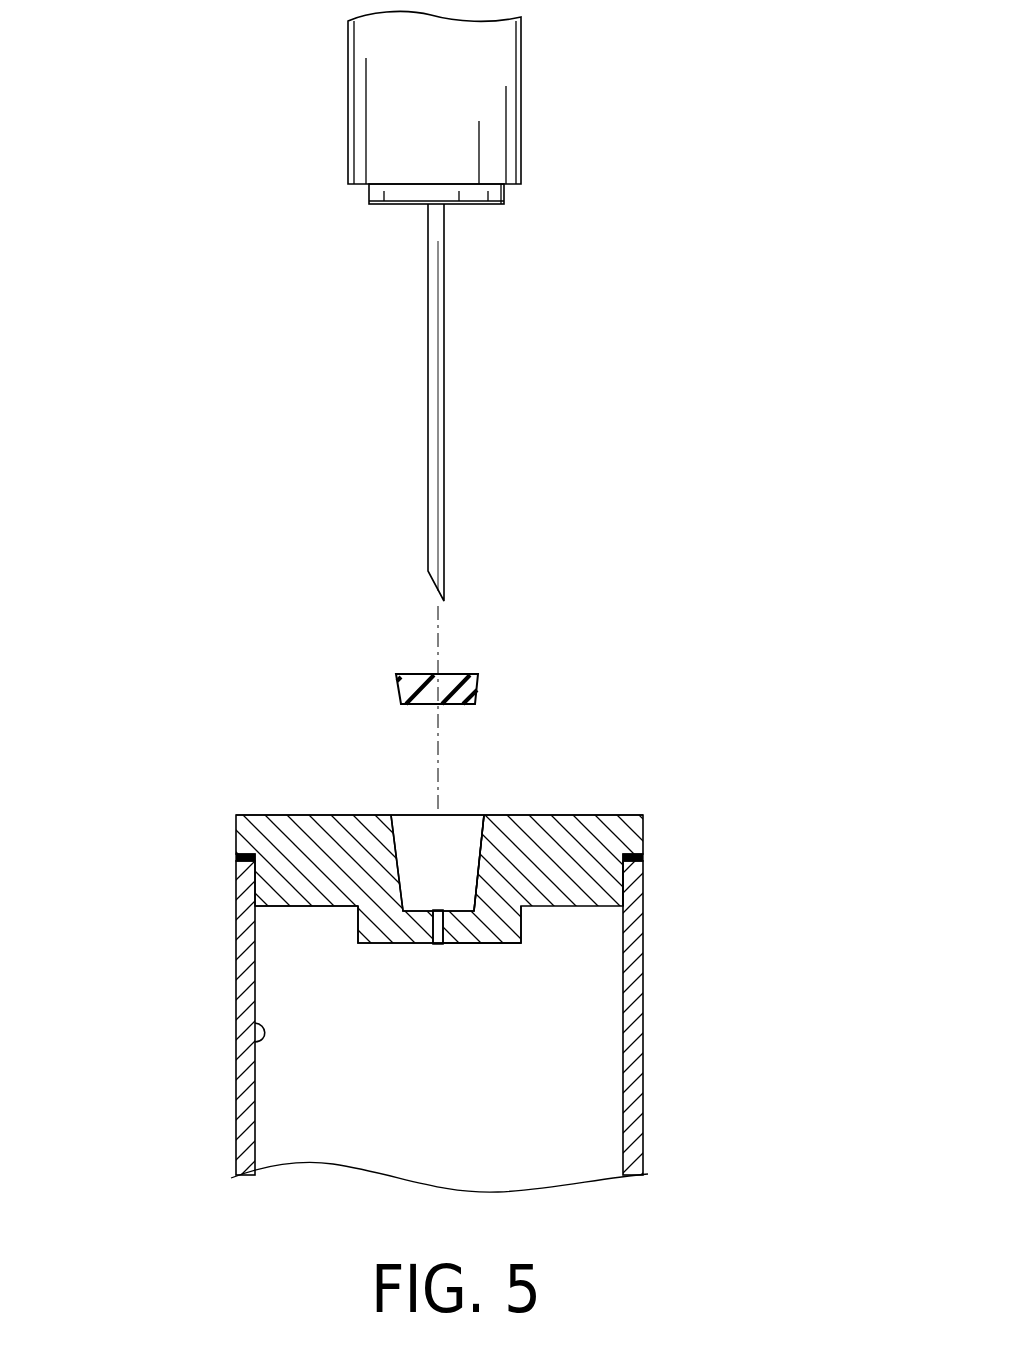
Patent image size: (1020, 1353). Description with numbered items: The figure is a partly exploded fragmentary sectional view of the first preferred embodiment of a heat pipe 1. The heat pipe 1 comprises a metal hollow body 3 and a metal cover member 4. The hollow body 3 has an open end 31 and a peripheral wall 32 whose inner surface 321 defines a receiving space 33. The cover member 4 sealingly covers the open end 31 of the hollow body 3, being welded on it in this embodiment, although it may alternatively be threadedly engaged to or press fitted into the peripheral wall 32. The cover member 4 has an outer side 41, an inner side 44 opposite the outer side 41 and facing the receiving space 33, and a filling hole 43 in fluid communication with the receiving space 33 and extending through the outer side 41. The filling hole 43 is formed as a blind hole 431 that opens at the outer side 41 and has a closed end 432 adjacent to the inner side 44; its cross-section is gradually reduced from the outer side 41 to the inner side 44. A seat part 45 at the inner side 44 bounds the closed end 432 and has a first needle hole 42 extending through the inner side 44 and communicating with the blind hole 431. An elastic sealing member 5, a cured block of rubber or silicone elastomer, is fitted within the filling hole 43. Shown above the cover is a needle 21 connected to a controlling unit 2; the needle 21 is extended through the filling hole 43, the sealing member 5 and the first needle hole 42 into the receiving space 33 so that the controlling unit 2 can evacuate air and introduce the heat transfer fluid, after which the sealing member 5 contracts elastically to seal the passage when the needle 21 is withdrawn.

The heat pipe 1 is at (457, 924).
The controlling unit 2 is at (492, 304).
The needle 21 is at (438, 428).
The metal hollow body 3 is at (444, 1026).
The open end 31 is at (595, 905).
The peripheral wall 32 is at (238, 961).
The inner surface 321 is at (255, 1024).
The receiving space 33 is at (278, 1128).
The cover member 4 is at (394, 858).
The outer side 41 is at (278, 807).
The first needle hole 42 is at (465, 936).
The filling hole 43 is at (405, 808).
The blind hole 431 is at (465, 808).
The closed end 432 is at (398, 933).
The inner side 44 is at (293, 898).
The seat part 45 is at (365, 936).
The elastic sealing member 5 is at (471, 665).